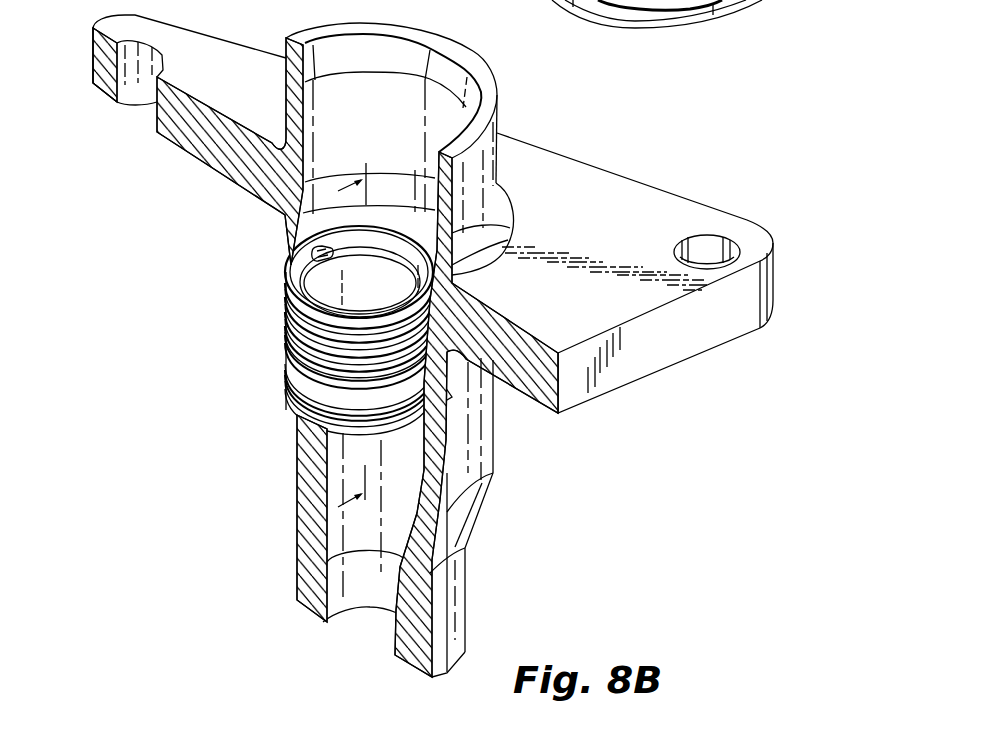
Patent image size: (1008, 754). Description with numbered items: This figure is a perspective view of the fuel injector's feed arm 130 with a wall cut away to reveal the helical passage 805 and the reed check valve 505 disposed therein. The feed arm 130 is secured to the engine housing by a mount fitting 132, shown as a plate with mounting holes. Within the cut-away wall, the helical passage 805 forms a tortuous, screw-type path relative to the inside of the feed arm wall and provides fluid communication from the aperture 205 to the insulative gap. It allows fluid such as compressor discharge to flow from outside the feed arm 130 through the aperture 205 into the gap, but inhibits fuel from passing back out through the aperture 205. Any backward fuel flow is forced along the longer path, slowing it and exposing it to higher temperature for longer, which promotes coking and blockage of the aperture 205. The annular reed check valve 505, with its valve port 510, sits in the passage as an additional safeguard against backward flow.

The feed arm 130 is at (467, 517).
The mount fitting 132 is at (597, 184).
The aperture 205 is at (453, 400).
The reed check valve 505 is at (377, 242).
The valve port 510 is at (313, 252).
The helical passage 805 is at (270, 378).